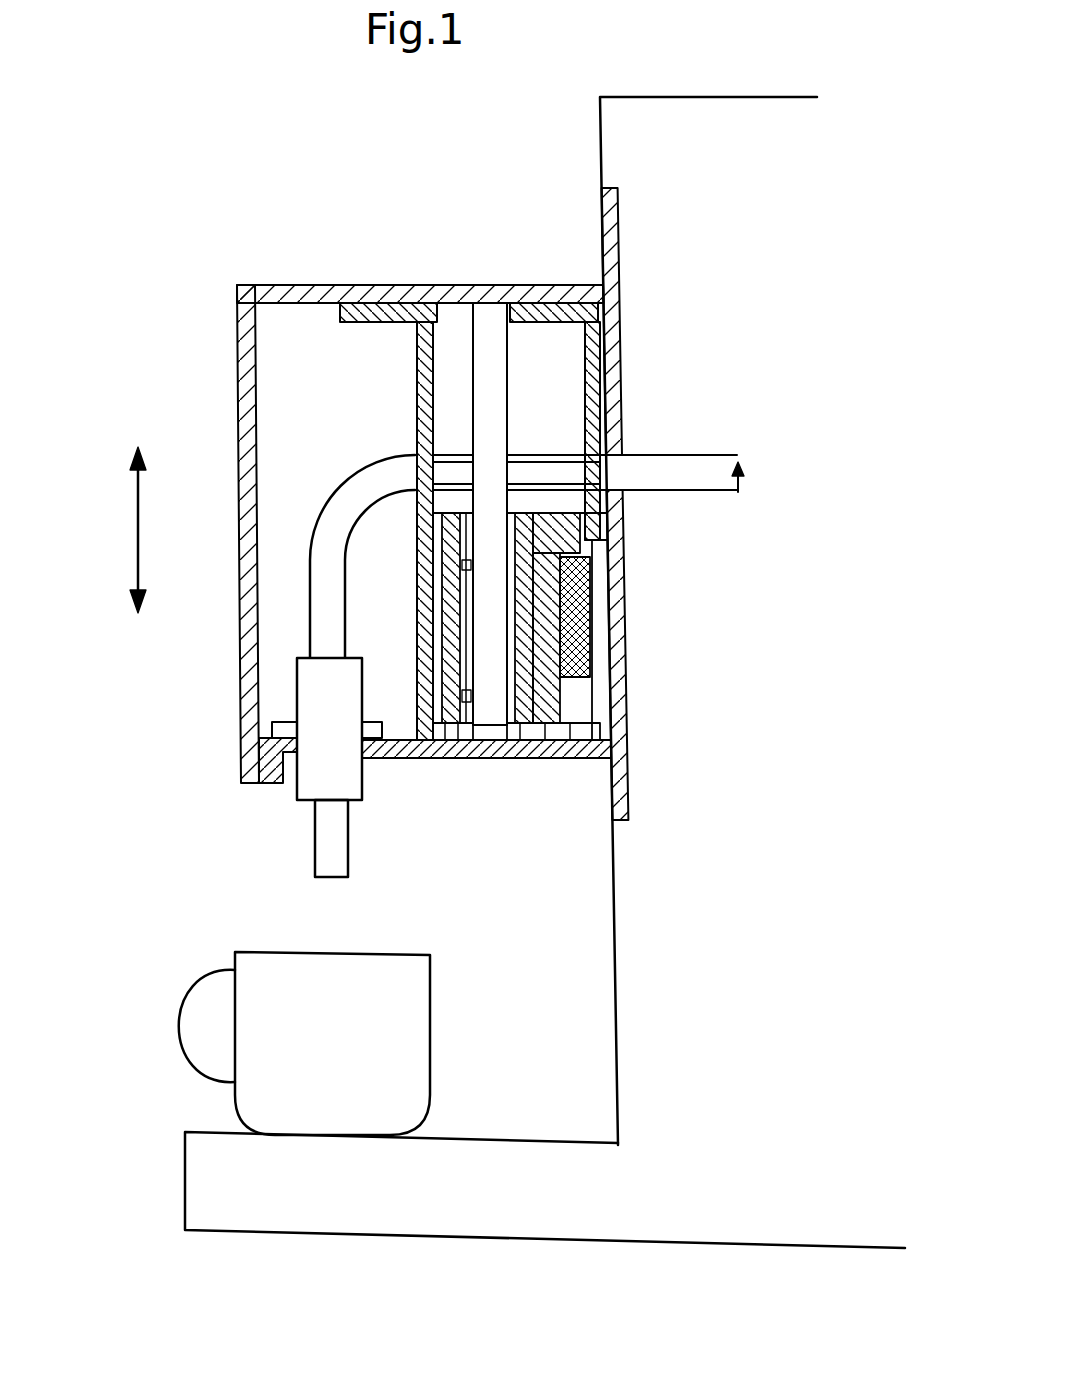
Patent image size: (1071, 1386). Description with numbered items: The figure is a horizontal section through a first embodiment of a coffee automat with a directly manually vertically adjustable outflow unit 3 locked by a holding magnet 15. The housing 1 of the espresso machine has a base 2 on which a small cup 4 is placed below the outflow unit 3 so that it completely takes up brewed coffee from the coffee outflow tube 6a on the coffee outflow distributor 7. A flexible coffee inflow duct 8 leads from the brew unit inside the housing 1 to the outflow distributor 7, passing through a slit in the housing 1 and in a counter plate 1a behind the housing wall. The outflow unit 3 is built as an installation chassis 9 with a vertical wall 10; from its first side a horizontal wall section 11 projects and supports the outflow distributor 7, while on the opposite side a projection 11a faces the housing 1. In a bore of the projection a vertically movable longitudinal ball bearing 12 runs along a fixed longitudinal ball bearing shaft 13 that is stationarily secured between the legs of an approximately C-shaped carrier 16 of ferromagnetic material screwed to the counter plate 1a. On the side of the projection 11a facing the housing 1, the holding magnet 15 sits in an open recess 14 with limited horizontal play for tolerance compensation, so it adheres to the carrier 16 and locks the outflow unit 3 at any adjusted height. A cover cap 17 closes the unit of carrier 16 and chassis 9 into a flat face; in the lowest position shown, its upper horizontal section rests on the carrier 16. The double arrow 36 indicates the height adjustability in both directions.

The housing 1 is at (600, 140).
The counter plate 1a is at (625, 633).
The base 2 is at (183, 1182).
The outflow unit 3 is at (225, 345).
The small cup 4 is at (197, 1018).
The coffee outflow tube 6a is at (315, 827).
The coffee outflow distributor 7 is at (302, 788).
The flexible coffee inflow duct 8 is at (745, 475).
The installation chassis 9 is at (340, 322).
The vertical wall 10 is at (433, 340).
The horizontal wall section 11 is at (378, 757).
The projection 11a is at (548, 500).
The longitudinal ball bearing 12 is at (463, 757).
The longitudinal ball bearing shaft 13 is at (493, 330).
The open recess 14 is at (553, 750).
The holding magnet 15 is at (578, 758).
The carrier 16 is at (500, 750).
The cover cap 17 is at (235, 387).
The double arrow 36 is at (138, 527).